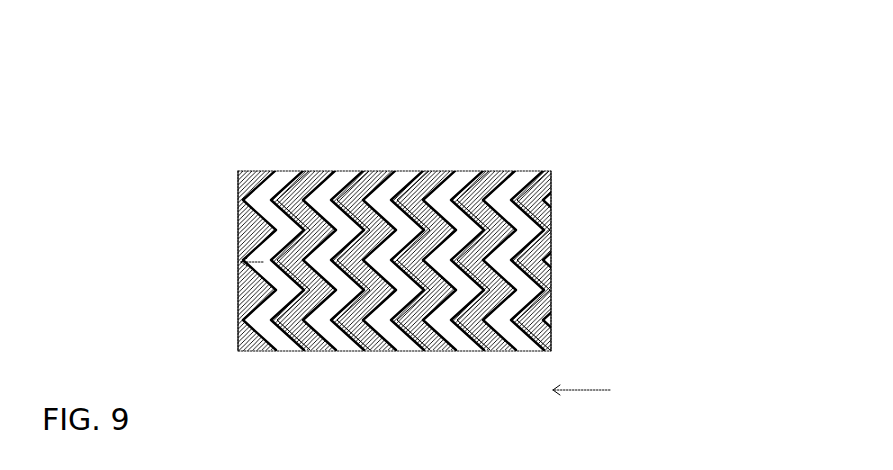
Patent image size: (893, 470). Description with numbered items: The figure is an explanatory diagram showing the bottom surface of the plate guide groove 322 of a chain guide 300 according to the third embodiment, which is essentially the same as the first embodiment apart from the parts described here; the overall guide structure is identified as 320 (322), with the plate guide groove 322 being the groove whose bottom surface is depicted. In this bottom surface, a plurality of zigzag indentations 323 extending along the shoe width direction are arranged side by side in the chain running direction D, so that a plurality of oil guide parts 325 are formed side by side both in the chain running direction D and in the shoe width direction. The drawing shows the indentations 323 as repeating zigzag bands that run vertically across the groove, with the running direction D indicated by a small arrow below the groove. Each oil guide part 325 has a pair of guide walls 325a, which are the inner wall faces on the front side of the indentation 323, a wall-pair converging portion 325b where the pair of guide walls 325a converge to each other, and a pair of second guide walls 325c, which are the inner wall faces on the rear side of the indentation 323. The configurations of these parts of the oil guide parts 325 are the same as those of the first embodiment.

The chain guide 300 is at (659, 157).
The adhesive layer 320 is at (168, 112).
The plate guide groove 322 is at (382, 224).
The zigzag indentation 323 is at (465, 232).
The oil guide part 325 is at (521, 163).
The guide wall 325a is at (383, 240).
The wall-pair converging portion 325b is at (358, 235).
The second guide wall 325c is at (410, 240).
The chain running direction D is at (581, 399).